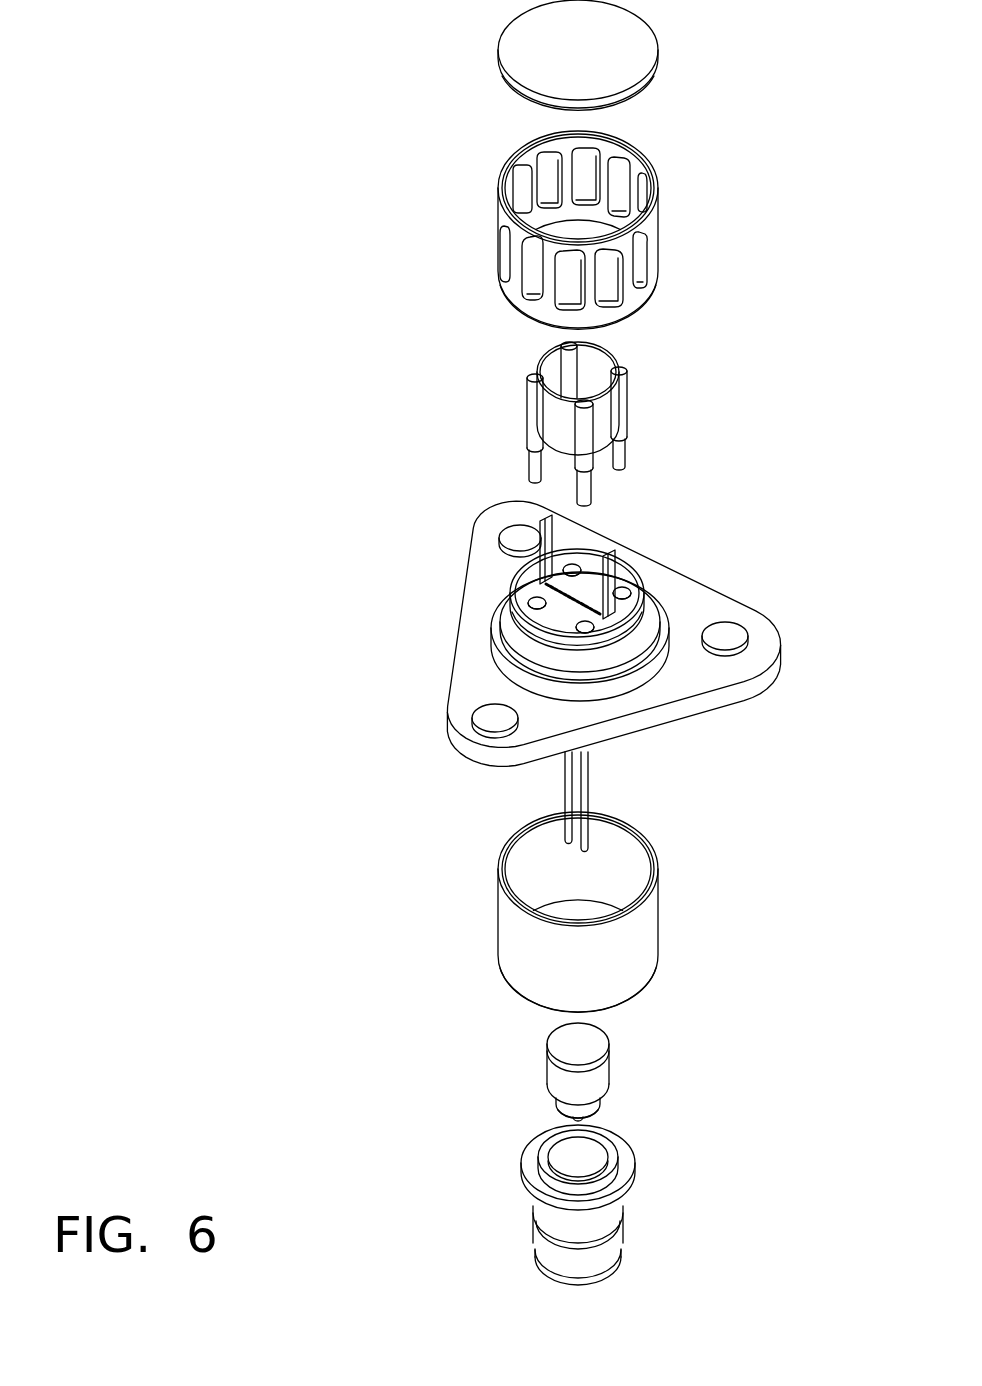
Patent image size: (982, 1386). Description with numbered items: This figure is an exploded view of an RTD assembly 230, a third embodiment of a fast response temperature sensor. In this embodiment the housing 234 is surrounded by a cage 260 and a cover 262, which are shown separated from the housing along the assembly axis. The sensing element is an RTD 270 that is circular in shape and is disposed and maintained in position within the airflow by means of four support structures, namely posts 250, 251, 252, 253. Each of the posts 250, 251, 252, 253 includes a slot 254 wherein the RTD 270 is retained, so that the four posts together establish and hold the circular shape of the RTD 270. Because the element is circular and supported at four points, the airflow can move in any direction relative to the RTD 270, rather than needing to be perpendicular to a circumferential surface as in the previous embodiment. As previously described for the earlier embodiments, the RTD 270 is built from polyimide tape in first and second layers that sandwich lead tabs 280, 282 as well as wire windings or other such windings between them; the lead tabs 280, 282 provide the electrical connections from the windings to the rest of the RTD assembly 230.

The RTD assembly 230 is at (193, 149).
The cover 262 is at (617, 58).
The housing 234 is at (613, 278).
The cage 260 is at (472, 226).
The RTD 270 is at (615, 345).
The post 250 is at (562, 348).
The post 251 is at (527, 407).
The post 252 is at (632, 395).
The post 253 is at (588, 427).
The slot 254 is at (533, 363).
The lead tab 280 is at (545, 540).
The lead tab 282 is at (610, 578).